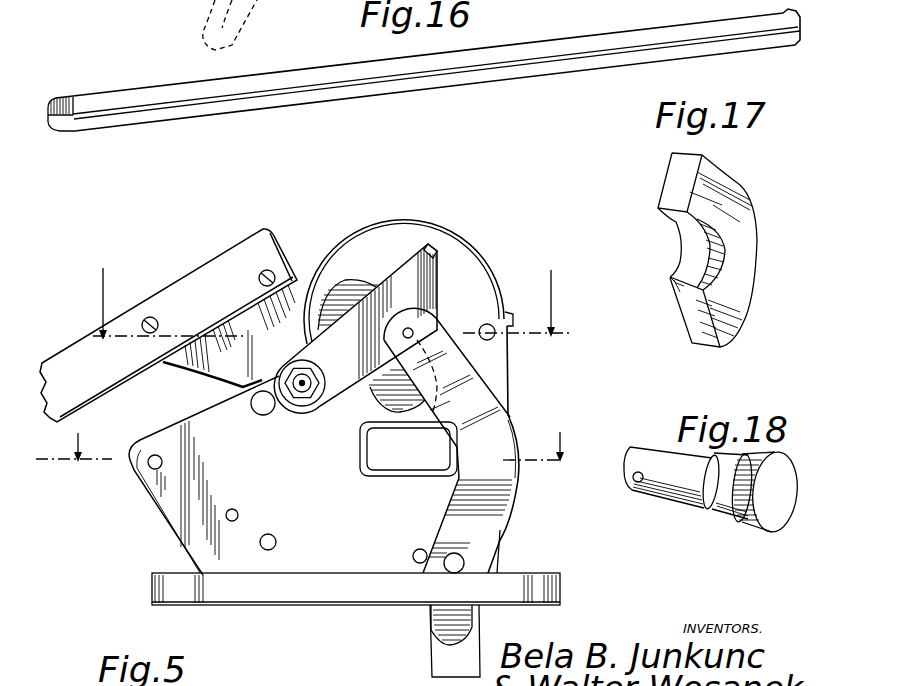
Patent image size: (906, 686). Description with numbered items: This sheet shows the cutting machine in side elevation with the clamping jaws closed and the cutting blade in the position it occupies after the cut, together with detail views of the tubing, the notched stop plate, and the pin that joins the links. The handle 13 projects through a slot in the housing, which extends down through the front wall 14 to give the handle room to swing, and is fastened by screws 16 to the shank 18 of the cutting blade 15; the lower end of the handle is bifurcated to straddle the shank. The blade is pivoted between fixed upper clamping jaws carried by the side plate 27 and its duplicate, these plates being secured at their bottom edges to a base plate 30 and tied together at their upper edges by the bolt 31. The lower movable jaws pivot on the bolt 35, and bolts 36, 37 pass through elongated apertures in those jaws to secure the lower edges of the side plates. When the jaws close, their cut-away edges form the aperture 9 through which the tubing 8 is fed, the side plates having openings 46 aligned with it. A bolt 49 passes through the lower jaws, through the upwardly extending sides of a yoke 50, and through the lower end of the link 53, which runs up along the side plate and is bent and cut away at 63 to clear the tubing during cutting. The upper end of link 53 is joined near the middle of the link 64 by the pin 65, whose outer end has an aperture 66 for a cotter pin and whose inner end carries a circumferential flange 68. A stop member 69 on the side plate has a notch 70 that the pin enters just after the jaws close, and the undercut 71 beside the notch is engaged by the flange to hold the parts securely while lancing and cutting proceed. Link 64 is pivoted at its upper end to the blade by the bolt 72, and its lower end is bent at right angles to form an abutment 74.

In FIG. 16, the tubing 8 is at (581, 33).
In FIG. 5, the aperture 9 is at (414, 477).
In FIG. 5, the handle 13 is at (127, 404).
In FIG. 5, the front wall 14 is at (317, 452).
In FIG. 5, the cutting blade 15 is at (229, 354).
In FIG. 5, the screws 16 is at (149, 317).
In FIG. 5, the shank 18 is at (318, 277).
In FIG. 5, the side plate 27 is at (175, 510).
In FIG. 5, the base plate 30 is at (330, 597).
In FIG. 5, the bolt 31 is at (270, 414).
In FIG. 5, the bolt 35 is at (237, 512).
In FIG. 5, the bolt 36 is at (277, 539).
In FIG. 5, the bolt 37 is at (413, 552).
In FIG. 5, the openings 46 is at (383, 476).
In FIG. 5, the bolt 49 is at (458, 555).
In FIG. 5, the yoke 50 is at (440, 654).
In FIG. 5, the link 53 is at (498, 492).
In FIG. 5, the cut away portion 63 is at (463, 450).
In FIG. 5, the link 64 is at (400, 270).
In FIG. 18, the pin 65 is at (680, 495).
In FIG. 5, the pin 65 is at (412, 332).
In FIG. 18, the aperture 66 is at (628, 487).
In FIG. 18, the circumferential flange 68 is at (740, 513).
In FIG. 17, the stop member 69 is at (735, 200).
In FIG. 17, the notch 70 is at (688, 247).
In FIG. 17, the undercut portion 71 is at (680, 286).
In FIG. 5, the bolt 72 is at (313, 384).
In FIG. 5, the abutment 74 is at (432, 246).